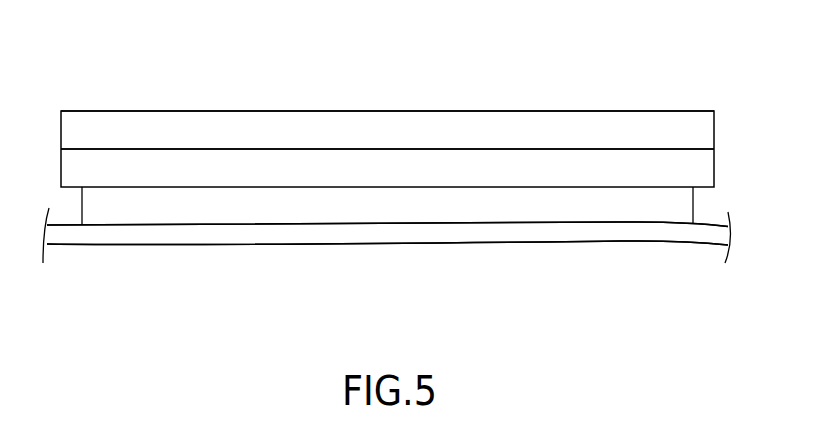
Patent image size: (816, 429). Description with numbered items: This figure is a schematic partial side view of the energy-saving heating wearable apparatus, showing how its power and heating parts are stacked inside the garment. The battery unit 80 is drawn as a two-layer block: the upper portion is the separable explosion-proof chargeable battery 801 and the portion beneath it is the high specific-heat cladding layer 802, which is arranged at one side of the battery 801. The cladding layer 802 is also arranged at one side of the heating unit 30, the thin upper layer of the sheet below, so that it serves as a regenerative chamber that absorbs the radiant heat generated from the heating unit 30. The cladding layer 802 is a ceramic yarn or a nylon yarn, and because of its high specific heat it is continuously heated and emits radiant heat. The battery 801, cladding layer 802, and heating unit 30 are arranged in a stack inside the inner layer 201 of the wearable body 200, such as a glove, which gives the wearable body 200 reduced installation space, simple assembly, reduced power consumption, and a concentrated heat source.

The battery unit 80 is at (207, 110).
The separable explosion-proof chargeable battery 801 is at (436, 123).
The high specific-heat cladding layer 802 is at (533, 167).
The heating unit 30 is at (432, 205).
The inner layer 201 is at (530, 233).
The wearable body 200 is at (585, 247).